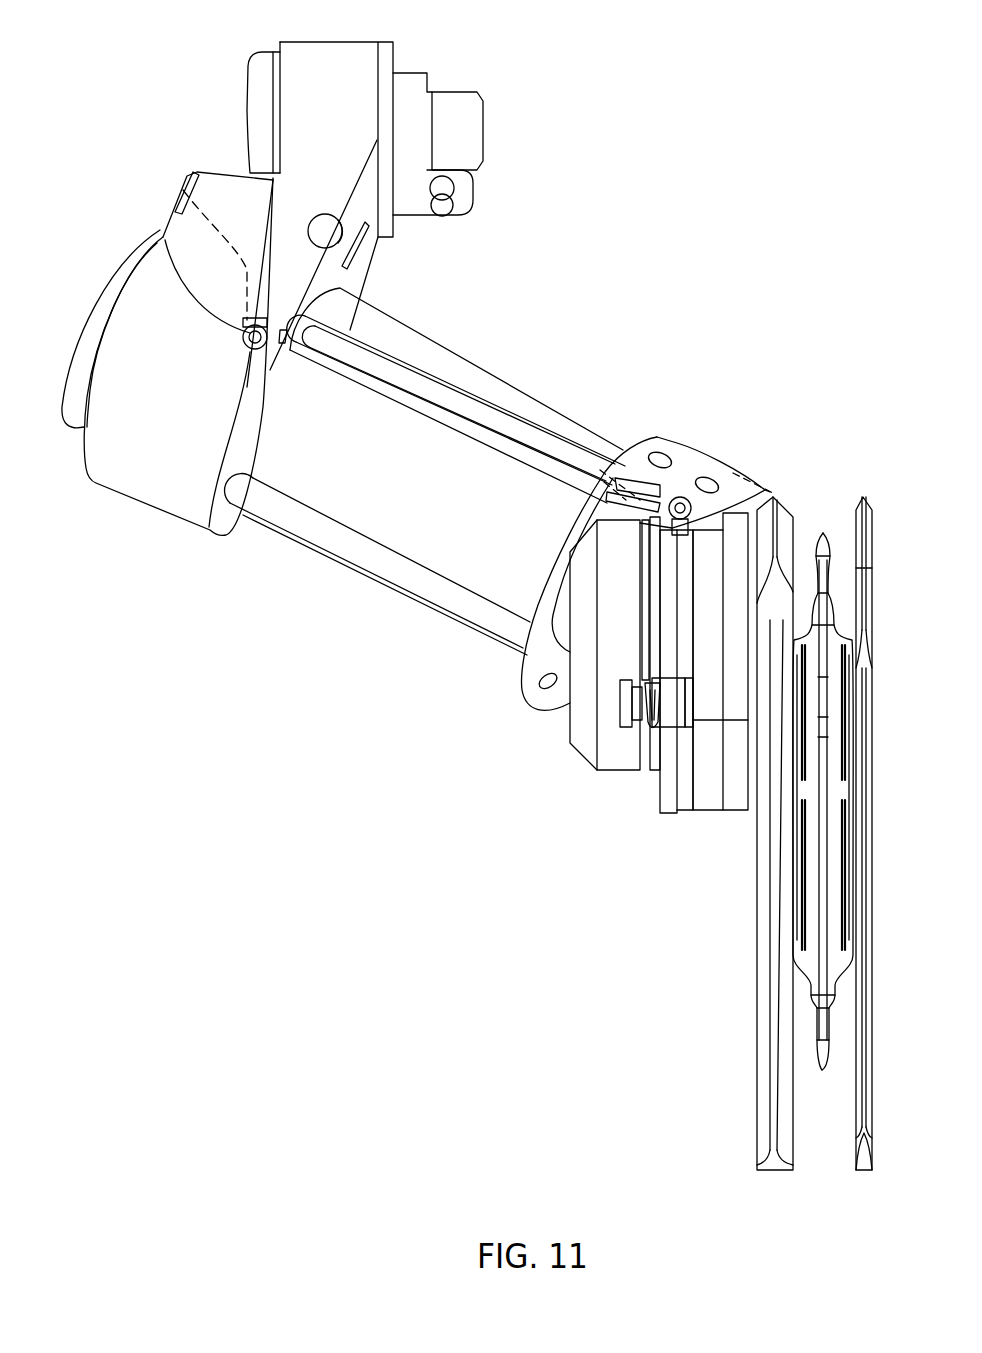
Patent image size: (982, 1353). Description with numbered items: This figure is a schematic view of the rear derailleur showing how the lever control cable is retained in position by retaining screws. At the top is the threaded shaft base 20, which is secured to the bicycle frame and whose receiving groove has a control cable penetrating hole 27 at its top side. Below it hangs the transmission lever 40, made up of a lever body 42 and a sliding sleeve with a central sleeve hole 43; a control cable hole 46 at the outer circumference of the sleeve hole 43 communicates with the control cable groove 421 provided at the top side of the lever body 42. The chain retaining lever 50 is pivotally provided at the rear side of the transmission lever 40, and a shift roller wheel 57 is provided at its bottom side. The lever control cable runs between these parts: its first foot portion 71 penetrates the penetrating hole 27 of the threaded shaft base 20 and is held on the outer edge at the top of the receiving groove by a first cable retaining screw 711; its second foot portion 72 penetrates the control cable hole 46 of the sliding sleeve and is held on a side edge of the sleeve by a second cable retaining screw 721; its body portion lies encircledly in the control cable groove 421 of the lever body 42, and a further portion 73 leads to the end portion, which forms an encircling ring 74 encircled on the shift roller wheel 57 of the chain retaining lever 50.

The threaded shaft base 20 is at (505, 88).
The control cable penetrating hole 27 is at (333, 288).
The transmission lever 40 is at (565, 746).
The lever body 42 is at (618, 770).
The control cable groove 421 is at (648, 614).
The sleeve hole 43 is at (632, 452).
The control cable hole 46 is at (640, 457).
The chain retaining lever 50 is at (722, 815).
The shift roller wheel 57 is at (672, 778).
The first foot portion 71 is at (188, 177).
The first cable retaining screw 711 is at (163, 237).
The second foot portion 72 is at (760, 493).
The second cable retaining screw 721 is at (682, 495).
The plate 73 is at (645, 640).
The encircling ring 74 is at (640, 727).